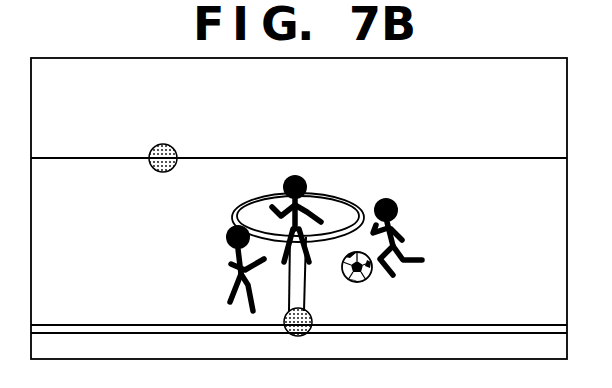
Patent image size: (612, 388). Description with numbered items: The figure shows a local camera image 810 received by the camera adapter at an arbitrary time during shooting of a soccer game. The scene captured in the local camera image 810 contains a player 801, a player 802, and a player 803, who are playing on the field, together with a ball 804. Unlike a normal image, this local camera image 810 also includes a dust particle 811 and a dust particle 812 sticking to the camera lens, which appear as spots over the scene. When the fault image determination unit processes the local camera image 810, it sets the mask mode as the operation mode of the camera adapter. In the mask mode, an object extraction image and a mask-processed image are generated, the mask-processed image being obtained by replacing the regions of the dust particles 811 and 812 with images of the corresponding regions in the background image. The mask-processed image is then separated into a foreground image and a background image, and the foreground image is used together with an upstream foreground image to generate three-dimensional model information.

The local camera image 810 is at (499, 58).
The dust particle 811 is at (176, 146).
The dust particle 812 is at (288, 333).
The player 801 is at (304, 177).
The player 802 is at (401, 207).
The player 803 is at (226, 244).
The ball 804 is at (368, 276).